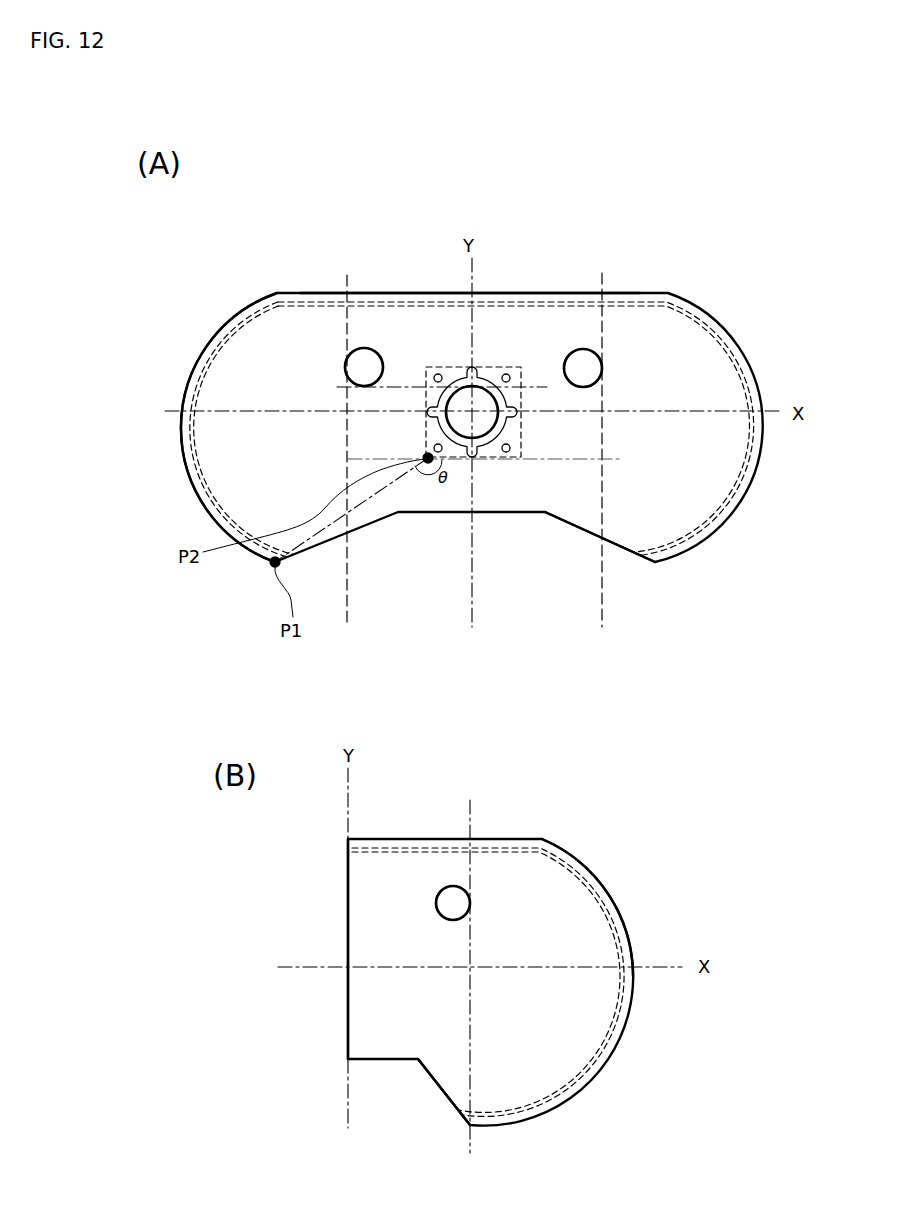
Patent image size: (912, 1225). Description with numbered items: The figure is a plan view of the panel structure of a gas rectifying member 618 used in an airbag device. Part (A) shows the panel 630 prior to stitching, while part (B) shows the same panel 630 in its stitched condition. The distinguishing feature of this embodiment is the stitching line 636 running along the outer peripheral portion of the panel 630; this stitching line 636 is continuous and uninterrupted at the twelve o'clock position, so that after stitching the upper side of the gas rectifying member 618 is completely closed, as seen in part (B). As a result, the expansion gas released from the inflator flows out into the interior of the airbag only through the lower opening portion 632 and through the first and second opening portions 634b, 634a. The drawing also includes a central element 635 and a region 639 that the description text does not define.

The gas rectifying member 618 is at (676, 260).
The panel 630 is at (325, 293).
The lower opening portion 632 is at (568, 527).
The second opening portion 634a is at (366, 348).
The first opening portion 634b is at (588, 350).
The shaft hub 635 is at (521, 400).
The stitching line 636 is at (226, 332).
The mounting plate region 639 is at (424, 430).